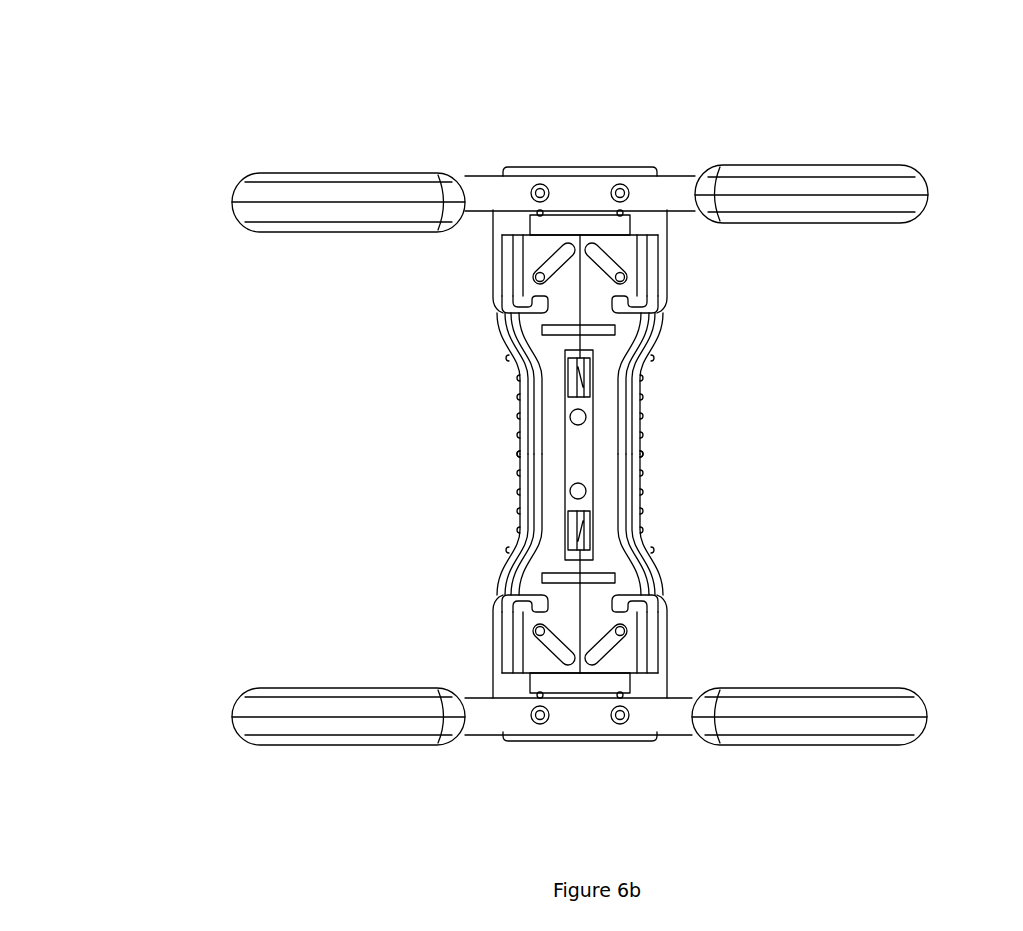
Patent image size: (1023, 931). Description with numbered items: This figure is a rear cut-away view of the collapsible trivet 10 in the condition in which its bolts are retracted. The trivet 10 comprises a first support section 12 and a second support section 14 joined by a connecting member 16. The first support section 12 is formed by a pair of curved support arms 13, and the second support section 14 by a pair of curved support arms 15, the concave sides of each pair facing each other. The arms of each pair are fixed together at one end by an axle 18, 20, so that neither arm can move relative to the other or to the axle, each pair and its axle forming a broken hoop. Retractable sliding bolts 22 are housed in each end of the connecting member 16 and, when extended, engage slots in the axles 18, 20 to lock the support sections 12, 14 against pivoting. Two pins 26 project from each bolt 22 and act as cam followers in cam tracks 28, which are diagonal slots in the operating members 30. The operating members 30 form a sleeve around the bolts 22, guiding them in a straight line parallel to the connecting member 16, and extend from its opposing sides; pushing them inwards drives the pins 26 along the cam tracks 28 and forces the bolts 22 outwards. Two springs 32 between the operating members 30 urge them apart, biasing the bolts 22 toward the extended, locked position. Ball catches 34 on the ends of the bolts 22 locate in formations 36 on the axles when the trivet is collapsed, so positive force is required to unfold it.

The collapsible trivet 10 is at (877, 81).
The first support section 12 is at (870, 187).
The support arms 13 is at (278, 212).
The second support section 14 is at (900, 699).
The support arms 15 is at (268, 722).
The connecting member 16 is at (652, 692).
The axle 18 is at (483, 190).
The axle 20 is at (681, 724).
The retractable sliding bolt 22 is at (625, 225).
The pins 26 is at (537, 285).
The cam tracks 28 is at (560, 250).
The operating members 30 is at (548, 463).
The springs 32 is at (583, 378).
The ball catches 34 is at (535, 183).
The formations 36 is at (538, 186).